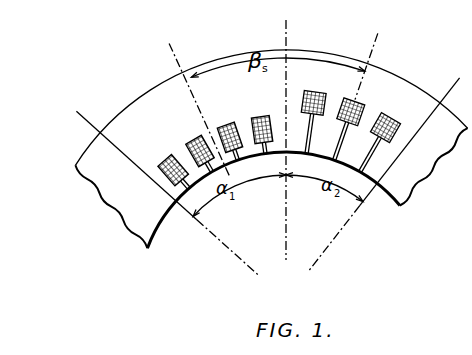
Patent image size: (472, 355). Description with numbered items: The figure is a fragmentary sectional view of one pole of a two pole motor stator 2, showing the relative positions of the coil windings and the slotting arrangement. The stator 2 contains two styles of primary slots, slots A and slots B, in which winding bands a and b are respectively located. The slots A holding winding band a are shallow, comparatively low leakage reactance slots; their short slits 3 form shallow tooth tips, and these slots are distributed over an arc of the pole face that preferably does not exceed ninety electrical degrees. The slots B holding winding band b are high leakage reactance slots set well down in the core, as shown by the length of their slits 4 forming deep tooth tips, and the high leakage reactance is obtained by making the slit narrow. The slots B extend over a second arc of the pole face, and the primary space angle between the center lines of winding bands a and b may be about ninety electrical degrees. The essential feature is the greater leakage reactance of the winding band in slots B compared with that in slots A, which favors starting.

The motor stator 2 is at (404, 85).
The slits 3 is at (183, 184).
The slits 4 is at (311, 140).
The slots A is at (186, 141).
The slots B is at (322, 92).
The winding band a is at (160, 181).
The winding band b is at (308, 93).